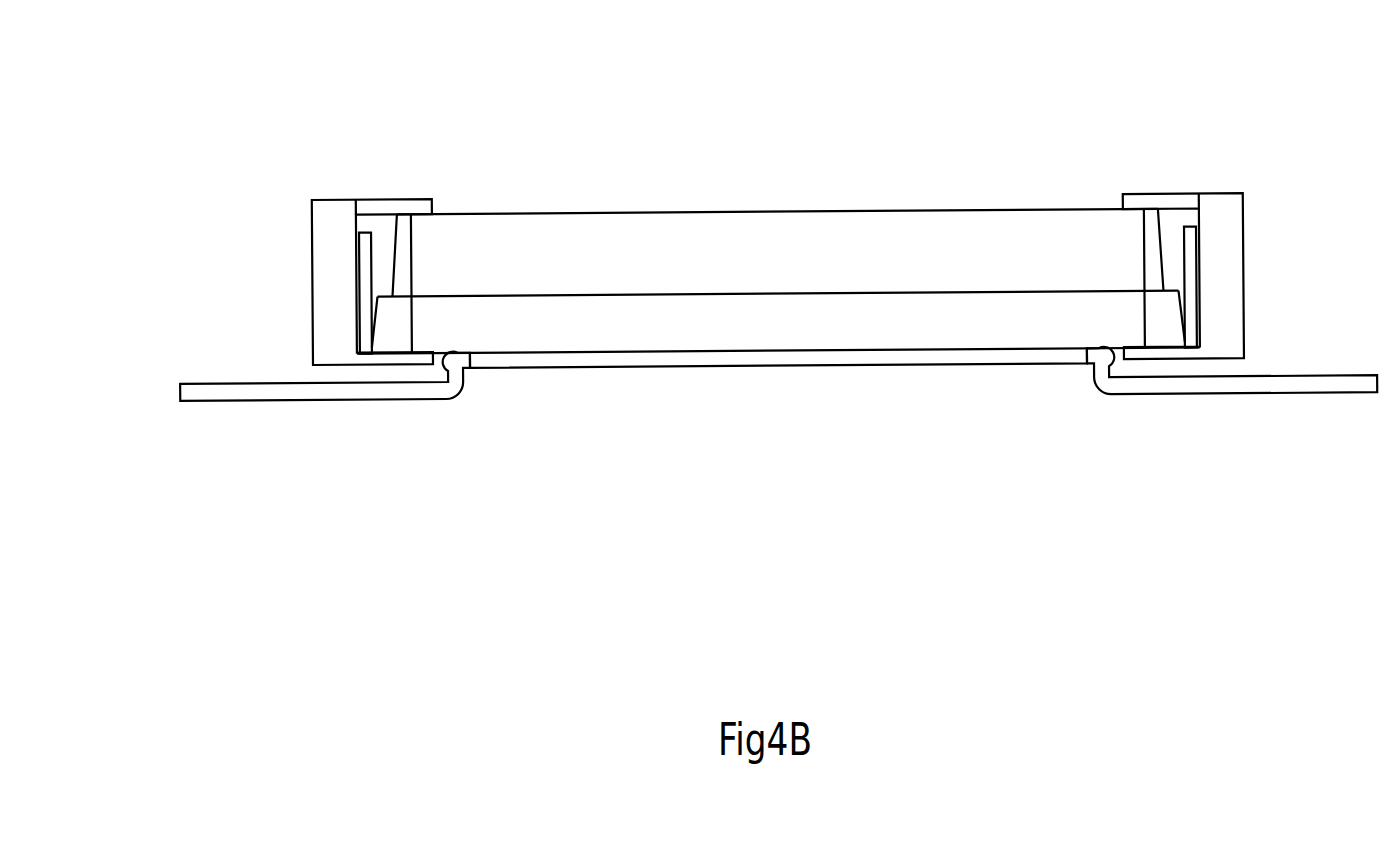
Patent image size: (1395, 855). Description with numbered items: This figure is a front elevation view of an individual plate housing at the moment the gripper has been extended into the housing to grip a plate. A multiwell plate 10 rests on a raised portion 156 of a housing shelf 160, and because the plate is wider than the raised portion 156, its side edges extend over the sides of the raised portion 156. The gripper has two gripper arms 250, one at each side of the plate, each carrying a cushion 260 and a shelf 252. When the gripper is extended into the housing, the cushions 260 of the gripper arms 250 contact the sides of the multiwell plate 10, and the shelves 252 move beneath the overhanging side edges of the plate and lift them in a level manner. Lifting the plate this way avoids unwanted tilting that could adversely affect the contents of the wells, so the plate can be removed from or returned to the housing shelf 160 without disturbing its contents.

The multiwell plate 10 is at (794, 271).
The raised portion 156 is at (752, 357).
The housing shelf 160 is at (317, 393).
The gripper arm 250 is at (320, 237).
The shelf 252 is at (378, 358).
The cushion 260 is at (365, 243).